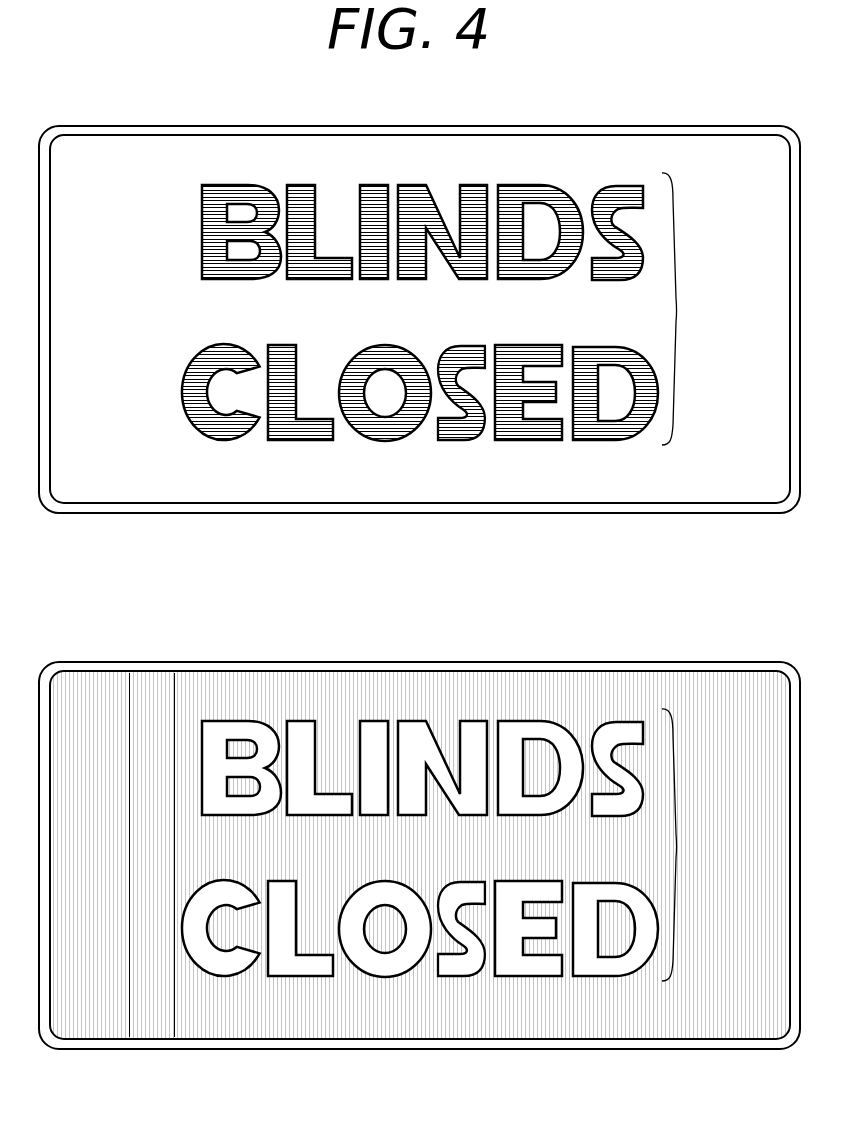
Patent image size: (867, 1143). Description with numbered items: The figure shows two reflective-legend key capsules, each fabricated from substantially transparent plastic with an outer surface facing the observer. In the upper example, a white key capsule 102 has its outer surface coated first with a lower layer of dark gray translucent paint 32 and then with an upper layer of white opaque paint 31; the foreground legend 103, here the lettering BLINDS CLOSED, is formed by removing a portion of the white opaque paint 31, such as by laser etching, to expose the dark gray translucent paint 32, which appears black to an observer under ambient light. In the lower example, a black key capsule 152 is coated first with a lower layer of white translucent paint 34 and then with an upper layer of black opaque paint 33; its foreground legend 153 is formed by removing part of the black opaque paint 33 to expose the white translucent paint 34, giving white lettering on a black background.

The white key capsule 102 is at (443, 126).
The foreground legend 103 is at (469, 326).
The white opaque paint 31 is at (96, 451).
The dark gray translucent paint 32 is at (366, 425).
The black key capsule 152 is at (419, 827).
The foreground legend 153 is at (469, 862).
The black opaque paint 33 is at (420, 892).
The white translucent paint 34 is at (385, 997).